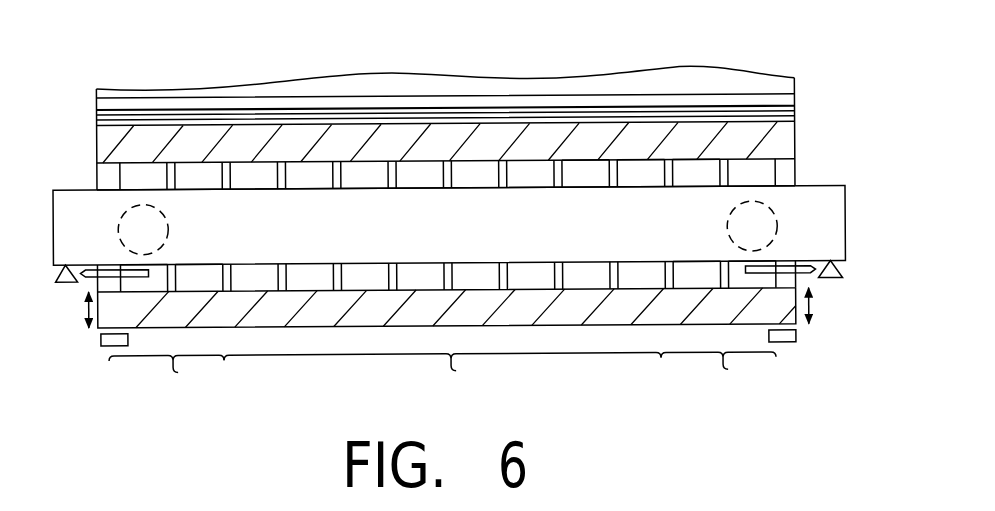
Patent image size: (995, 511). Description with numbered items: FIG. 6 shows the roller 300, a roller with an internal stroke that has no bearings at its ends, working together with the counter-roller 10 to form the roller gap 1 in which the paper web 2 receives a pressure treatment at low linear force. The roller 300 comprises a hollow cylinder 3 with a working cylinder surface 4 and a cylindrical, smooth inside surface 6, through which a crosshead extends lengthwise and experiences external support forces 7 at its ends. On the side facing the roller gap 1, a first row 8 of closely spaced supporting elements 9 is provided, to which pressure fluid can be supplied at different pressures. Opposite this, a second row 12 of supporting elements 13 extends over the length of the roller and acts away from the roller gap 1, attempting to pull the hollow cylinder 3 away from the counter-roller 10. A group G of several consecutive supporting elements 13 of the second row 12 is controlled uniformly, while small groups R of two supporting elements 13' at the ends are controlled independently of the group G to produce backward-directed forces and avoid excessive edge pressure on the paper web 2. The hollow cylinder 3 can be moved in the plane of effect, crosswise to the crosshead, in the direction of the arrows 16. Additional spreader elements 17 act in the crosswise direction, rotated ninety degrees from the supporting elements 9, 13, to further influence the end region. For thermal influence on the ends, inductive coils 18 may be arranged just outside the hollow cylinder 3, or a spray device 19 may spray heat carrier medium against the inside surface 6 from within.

The roller gap 1 is at (800, 122).
The paper web 2 is at (700, 122).
The hollow cylinder 3 is at (97, 138).
The working cylinder surface 4 is at (105, 118).
The inside surface 6 is at (101, 165).
The external support forces 7 is at (55, 277).
The first row 8 is at (778, 176).
The supporting elements 9 is at (577, 181).
The roller 10 is at (800, 85).
The second row 12 is at (786, 264).
The supporting elements 13 is at (446, 255).
The supporting elements 13' is at (448, 248).
The arrows 16 is at (87, 317).
The spreader elements 17 is at (118, 228).
The inductive coils 18 is at (99, 335).
The spray device 19 is at (84, 279).
The roller 300 is at (823, 345).
The groups R is at (442, 382).
The group G is at (442, 382).